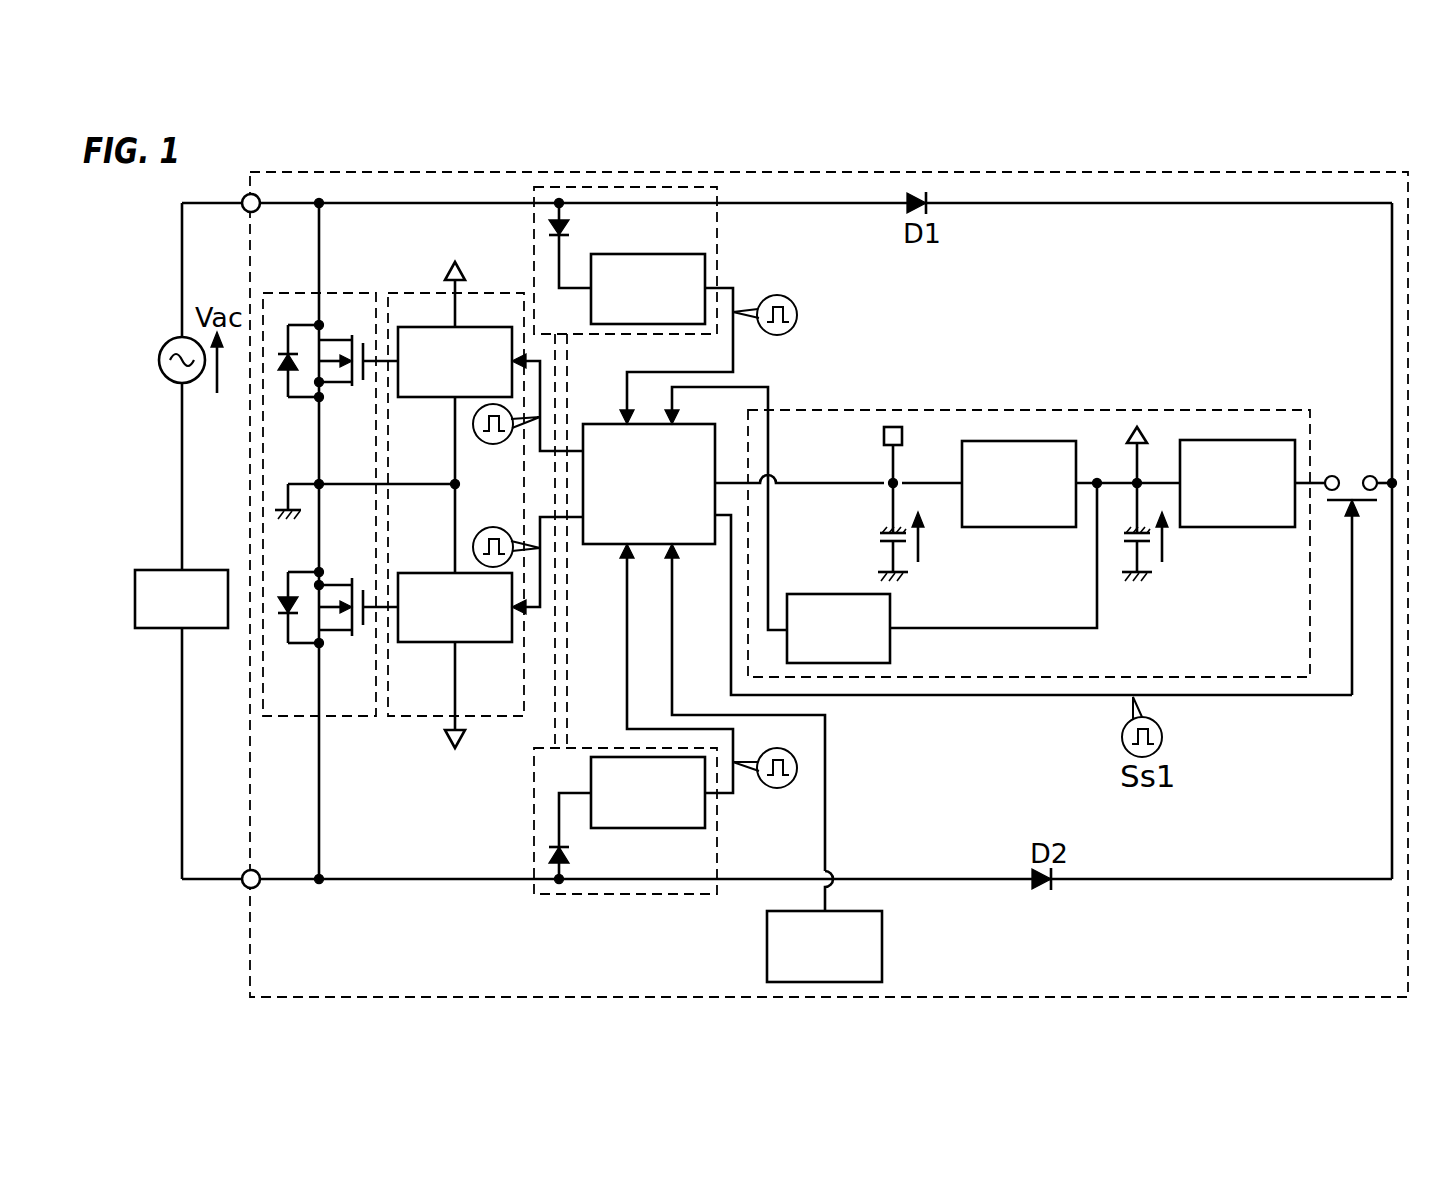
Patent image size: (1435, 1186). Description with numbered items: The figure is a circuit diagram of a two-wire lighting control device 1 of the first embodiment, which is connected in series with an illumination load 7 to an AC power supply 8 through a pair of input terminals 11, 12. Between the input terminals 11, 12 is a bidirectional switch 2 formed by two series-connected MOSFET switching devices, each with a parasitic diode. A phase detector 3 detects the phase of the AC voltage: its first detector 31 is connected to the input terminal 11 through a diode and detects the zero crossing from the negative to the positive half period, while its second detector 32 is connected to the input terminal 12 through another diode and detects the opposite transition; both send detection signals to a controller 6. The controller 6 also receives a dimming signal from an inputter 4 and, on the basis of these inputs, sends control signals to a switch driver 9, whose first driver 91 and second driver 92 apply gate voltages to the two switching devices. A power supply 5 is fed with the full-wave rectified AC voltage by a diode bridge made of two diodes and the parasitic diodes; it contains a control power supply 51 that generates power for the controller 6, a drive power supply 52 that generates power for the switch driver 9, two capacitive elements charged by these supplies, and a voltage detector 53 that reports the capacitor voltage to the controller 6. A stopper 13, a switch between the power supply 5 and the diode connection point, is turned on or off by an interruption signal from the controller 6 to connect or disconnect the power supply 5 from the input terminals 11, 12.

The lighting control device 1 is at (1412, 179).
The bidirectional switch 2 is at (286, 291).
The phase detector 3 is at (719, 238).
The inputter 4 is at (883, 945).
The power supply 5 is at (1244, 408).
The controller 6 is at (604, 424).
The illumination load 7 is at (158, 574).
The AC power supply 8 is at (172, 343).
The switch driver 9 is at (418, 291).
The input terminal 11 is at (244, 198).
The input terminal 12 is at (244, 886).
The stopper 13 is at (1350, 480).
The first detector 31 is at (668, 255).
The second detector 32 is at (668, 830).
The control power supply 51 is at (1024, 528).
The drive power supply 52 is at (1273, 520).
The voltage detector 53 is at (815, 596).
The first driver 91 is at (432, 398).
The second driver 92 is at (430, 572).